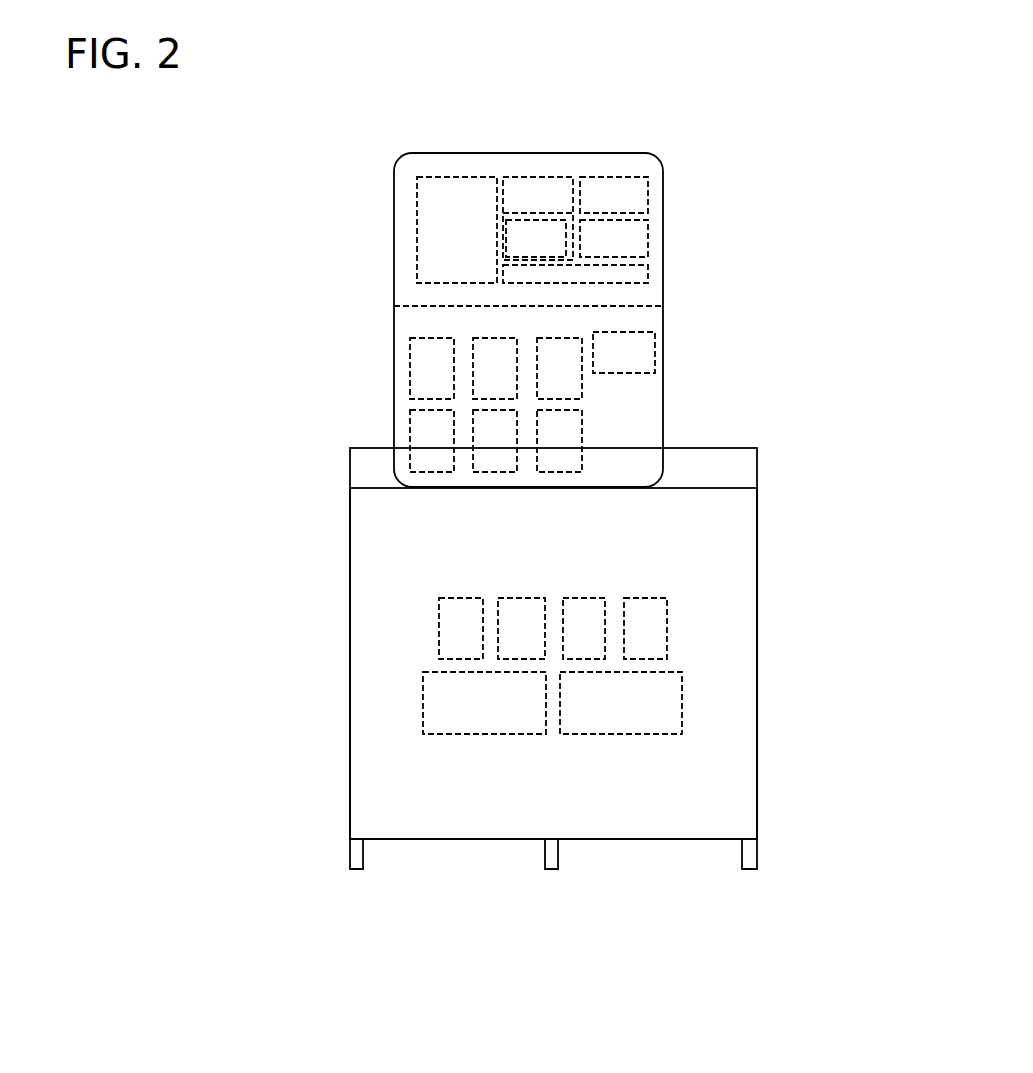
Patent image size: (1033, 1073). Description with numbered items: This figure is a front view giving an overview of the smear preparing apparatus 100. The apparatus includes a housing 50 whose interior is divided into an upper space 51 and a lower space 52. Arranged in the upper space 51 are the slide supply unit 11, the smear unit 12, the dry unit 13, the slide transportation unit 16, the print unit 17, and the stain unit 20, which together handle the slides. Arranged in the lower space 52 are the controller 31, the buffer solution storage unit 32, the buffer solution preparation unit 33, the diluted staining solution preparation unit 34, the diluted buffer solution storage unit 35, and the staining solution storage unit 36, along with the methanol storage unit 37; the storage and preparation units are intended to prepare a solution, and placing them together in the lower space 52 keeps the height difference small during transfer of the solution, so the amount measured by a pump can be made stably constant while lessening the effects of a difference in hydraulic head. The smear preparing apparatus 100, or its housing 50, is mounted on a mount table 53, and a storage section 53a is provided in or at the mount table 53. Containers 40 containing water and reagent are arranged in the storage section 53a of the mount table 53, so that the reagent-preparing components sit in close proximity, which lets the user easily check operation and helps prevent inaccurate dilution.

The smear preparing apparatus 100 is at (752, 127).
The housing 50 is at (637, 153).
The upper space 51 is at (670, 250).
The lower space 52 is at (670, 378).
The mount table 53 is at (758, 628).
The storage section 53a is at (722, 695).
The stain unit 20 is at (464, 173).
The smear unit 12 is at (543, 173).
The dry unit 13 is at (560, 218).
The print unit 17 is at (655, 200).
The slide supply unit 11 is at (655, 237).
The slide transportation unit 16 is at (655, 277).
The controller 31 is at (408, 418).
The buffer solution storage unit 32 is at (470, 462).
The buffer solution preparation unit 33 is at (590, 432).
The diluted staining solution preparation unit 34 is at (408, 347).
The diluted buffer solution storage unit 35 is at (485, 336).
The staining solution storage unit 36 is at (556, 336).
The methanol storage unit 37 is at (660, 341).
The containers 40 is at (600, 580).